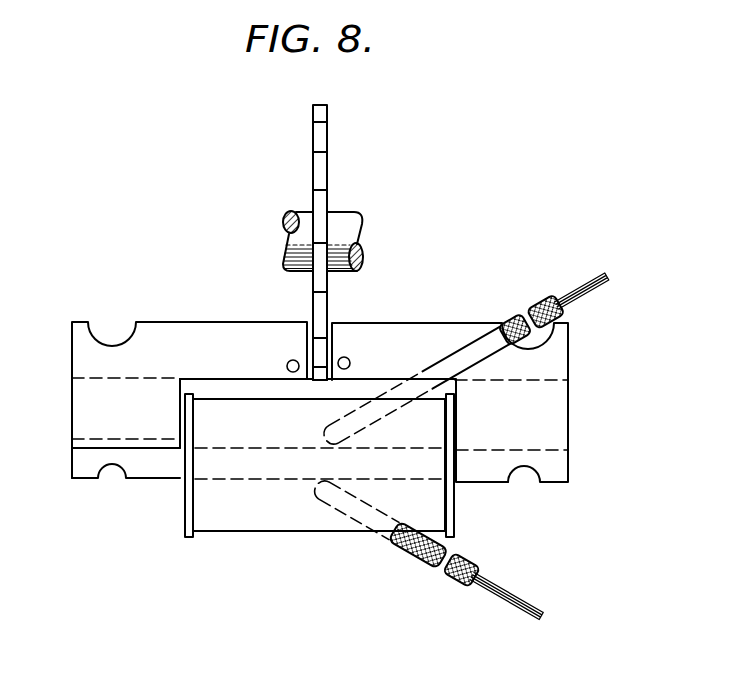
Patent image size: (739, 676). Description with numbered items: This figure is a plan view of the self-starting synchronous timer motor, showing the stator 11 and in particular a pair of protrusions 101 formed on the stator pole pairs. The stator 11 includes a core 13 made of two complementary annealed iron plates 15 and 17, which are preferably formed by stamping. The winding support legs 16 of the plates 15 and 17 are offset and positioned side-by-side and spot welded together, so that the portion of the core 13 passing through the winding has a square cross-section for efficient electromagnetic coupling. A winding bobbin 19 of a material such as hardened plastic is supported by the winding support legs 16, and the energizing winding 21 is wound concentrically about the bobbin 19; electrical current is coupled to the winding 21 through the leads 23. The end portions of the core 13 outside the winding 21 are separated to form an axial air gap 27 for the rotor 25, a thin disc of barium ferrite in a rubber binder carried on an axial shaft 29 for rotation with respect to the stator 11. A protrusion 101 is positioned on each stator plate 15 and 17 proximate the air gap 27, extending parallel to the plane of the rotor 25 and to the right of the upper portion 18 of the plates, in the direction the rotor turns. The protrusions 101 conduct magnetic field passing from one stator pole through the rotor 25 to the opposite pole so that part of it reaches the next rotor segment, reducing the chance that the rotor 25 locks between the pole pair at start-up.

The stator 11 is at (457, 485).
The core 13 is at (570, 466).
The core plate 15 is at (570, 410).
The winding support legs 16 is at (171, 476).
The core plate 17 is at (72, 366).
The upper portion 18 is at (265, 363).
The winding bobbin 19 is at (184, 514).
The energizing winding 21 is at (233, 525).
The leads 23 is at (588, 294).
The rotor 25 is at (328, 300).
The axial air gap 27 is at (310, 322).
The axial shaft 29 is at (363, 243).
The protrusion 101 is at (293, 359).